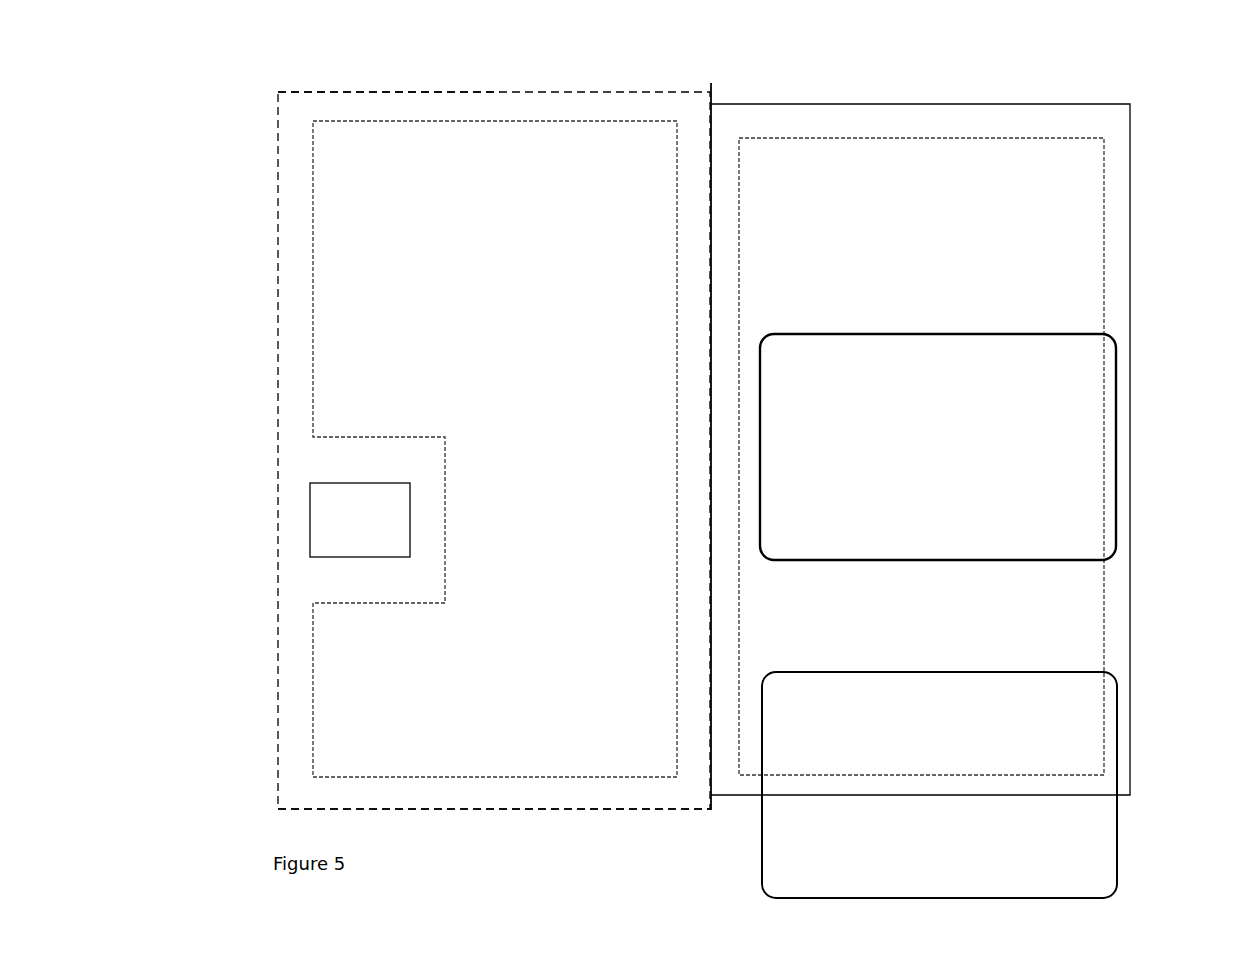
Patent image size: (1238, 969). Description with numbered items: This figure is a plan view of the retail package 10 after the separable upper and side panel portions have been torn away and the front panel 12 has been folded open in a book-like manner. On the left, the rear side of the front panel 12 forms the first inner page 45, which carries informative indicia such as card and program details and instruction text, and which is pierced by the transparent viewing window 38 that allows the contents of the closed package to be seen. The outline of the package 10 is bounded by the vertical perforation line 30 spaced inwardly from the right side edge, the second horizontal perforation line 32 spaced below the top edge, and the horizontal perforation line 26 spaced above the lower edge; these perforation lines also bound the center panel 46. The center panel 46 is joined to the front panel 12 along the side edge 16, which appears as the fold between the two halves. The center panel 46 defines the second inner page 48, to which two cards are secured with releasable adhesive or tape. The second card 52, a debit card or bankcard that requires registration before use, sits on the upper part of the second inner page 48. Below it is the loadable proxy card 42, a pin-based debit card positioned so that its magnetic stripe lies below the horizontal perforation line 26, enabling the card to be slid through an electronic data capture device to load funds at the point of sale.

The retail package 10 is at (1148, 145).
The front panel 12 is at (521, 99).
The left side edge 16 is at (712, 118).
The horizontal perforation line 26 is at (298, 812).
The vertical perforation line 30 is at (277, 299).
The second horizontal perforation line 32 is at (357, 91).
The transparent viewing window 38 is at (312, 500).
The loadable proxy card 42 is at (1093, 737).
The first inner page 45 is at (499, 240).
The center panel 46 is at (1113, 290).
The second inner page 48 is at (916, 229).
The second card 52 is at (1088, 410).